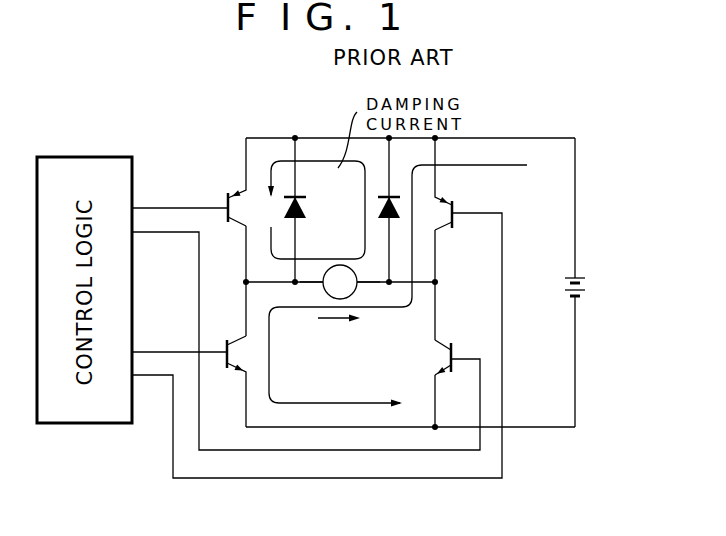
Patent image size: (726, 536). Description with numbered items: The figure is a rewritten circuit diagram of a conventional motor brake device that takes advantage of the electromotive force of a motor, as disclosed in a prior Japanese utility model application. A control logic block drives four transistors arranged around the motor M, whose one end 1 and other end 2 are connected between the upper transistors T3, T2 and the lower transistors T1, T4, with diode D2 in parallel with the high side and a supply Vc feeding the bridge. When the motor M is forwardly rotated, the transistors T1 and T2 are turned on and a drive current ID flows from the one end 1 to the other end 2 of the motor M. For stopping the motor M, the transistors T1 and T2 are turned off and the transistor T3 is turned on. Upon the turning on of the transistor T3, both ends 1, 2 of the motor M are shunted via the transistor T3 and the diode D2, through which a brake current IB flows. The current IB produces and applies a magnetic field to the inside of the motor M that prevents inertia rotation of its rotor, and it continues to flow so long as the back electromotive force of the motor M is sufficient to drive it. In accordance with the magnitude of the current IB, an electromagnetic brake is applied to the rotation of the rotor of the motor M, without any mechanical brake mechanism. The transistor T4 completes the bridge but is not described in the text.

The transistor T1 is at (232, 373).
The transistor T2 is at (445, 196).
The transistor T3 is at (228, 191).
The fourth transistor (NPN, low side) T4 is at (443, 337).
The diode D2 is at (418, 236).
The motor M is at (340, 282).
The one end of the motor 1 is at (368, 295).
The other end of the motor 2 is at (311, 295).
The brake current IB is at (328, 161).
The drive current ID is at (398, 286).
The supply voltage source Vc is at (590, 291).